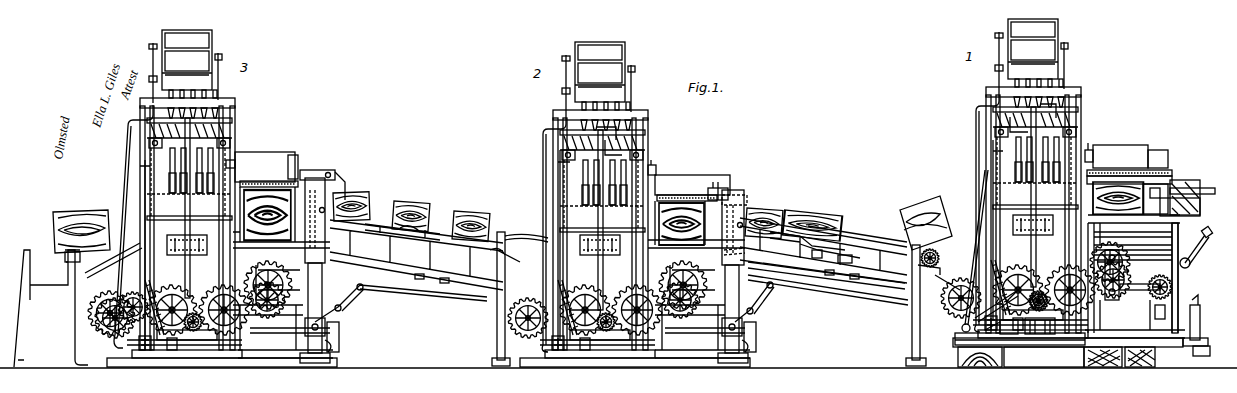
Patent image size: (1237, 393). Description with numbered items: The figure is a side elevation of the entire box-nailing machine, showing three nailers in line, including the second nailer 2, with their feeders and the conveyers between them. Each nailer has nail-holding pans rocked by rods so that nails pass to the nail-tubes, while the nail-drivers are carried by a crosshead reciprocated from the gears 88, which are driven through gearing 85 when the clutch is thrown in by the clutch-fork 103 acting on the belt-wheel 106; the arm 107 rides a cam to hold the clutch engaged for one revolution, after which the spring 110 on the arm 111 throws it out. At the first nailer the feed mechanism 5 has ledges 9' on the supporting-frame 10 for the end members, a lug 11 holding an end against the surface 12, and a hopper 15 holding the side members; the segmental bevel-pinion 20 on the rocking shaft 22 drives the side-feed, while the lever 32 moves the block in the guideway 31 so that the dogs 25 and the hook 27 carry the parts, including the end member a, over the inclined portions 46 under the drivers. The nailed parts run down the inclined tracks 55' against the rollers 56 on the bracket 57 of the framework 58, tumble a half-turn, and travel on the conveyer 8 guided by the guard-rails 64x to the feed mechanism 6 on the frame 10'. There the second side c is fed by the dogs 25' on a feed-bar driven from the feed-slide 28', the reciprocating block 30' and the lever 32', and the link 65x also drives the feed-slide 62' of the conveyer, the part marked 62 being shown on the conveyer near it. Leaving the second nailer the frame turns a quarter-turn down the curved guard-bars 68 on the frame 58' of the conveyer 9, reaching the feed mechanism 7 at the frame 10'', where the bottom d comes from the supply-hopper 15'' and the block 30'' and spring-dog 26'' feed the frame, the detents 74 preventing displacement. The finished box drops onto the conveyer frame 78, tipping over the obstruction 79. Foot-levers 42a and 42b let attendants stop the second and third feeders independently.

The second nailer 2 is at (478, 214).
The feed mechanism of the first nailer 5 is at (1135, 229).
The feed mechanism of the second nailer 6 is at (689, 173).
The feed mechanism of the third nailer 7 is at (262, 159).
The conveyer 8 is at (823, 251).
The conveyer 9 is at (401, 296).
The ledges 9' is at (1159, 225).
The supporting-frame 10 is at (1194, 278).
The frame of the second feeder 10' is at (743, 265).
The frame of the third nailer 10'' is at (334, 266).
The lug 11 is at (1125, 218).
The surface of the frame 12 is at (1195, 207).
The hopper 15 is at (1116, 155).
The supply-hopper 15'' is at (281, 203).
The segmental bevel-pinion 20 is at (1168, 310).
The shaft 22 is at (1172, 287).
The dogs 25 is at (1148, 164).
The dogs 25' is at (723, 180).
The spring-dog 26'' is at (753, 197).
The hook 27 is at (1212, 186).
The feed-slide 28' is at (825, 275).
The reciprocating block 30' is at (603, 236).
The block 30'' is at (191, 232).
The guideway 31 is at (1158, 225).
The lever 32 is at (1204, 247).
The lever 32' is at (764, 309).
The foot-lever 42a is at (757, 340).
The foot-lever 42b is at (340, 322).
The inclined portions 46 is at (1068, 204).
The inclined tracks 55' is at (964, 251).
The rollers 56 is at (935, 260).
The bracket 57 is at (939, 277).
The framework of the conveyer 58 is at (907, 305).
The frame of the conveyer 58' is at (490, 299).
The block 62 is at (795, 219).
The feed-slide of the conveyer 62' is at (840, 279).
The guard-rails 64x is at (908, 202).
The link 65x is at (808, 270).
The curved guard-bars 68 is at (509, 256).
The detents 74 is at (325, 175).
The conveyer frame 78 is at (68, 306).
The obstruction 79 is at (118, 305).
The gearing 85 is at (975, 318).
The gears 88 is at (1036, 281).
The clutch-fork 103 is at (1040, 335).
The belt-wheel 106 is at (1022, 350).
The arm 107 is at (1062, 348).
The spring 110 is at (985, 330).
The arm of the lever 111 is at (1010, 335).
The end member a is at (1166, 182).
The second side member c is at (698, 178).
The bottom d is at (272, 182).